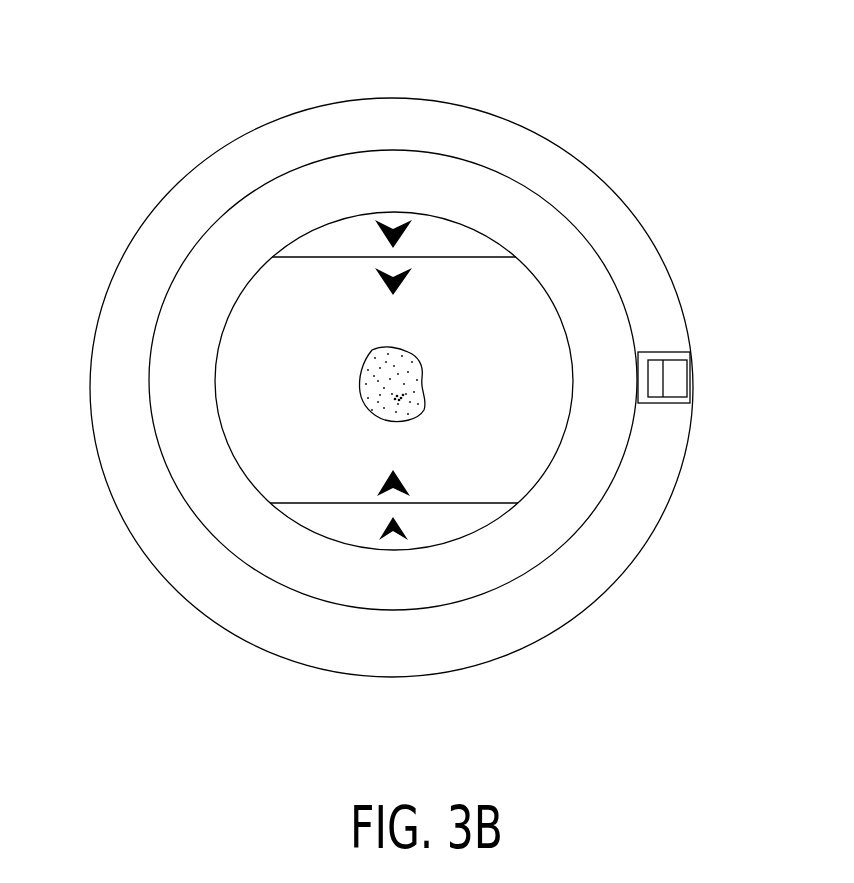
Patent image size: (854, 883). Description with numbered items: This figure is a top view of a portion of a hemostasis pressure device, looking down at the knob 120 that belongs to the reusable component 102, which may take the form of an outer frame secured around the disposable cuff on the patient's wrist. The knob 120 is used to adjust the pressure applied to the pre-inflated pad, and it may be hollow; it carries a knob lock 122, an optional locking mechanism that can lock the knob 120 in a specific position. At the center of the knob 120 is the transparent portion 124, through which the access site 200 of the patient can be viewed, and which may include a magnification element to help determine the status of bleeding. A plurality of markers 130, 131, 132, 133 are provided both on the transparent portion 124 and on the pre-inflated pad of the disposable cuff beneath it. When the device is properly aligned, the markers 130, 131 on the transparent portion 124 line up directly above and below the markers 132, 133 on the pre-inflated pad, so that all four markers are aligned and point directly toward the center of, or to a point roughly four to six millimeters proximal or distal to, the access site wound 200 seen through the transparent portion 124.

The reusable component 102 is at (609, 122).
The knob 120 is at (457, 187).
The knob lock 122 is at (678, 369).
The transparent portion 124 is at (267, 417).
The marker 130 is at (393, 229).
The marker 131 is at (393, 531).
The marker 132 is at (393, 277).
The marker 133 is at (393, 490).
The access site 200 is at (400, 397).